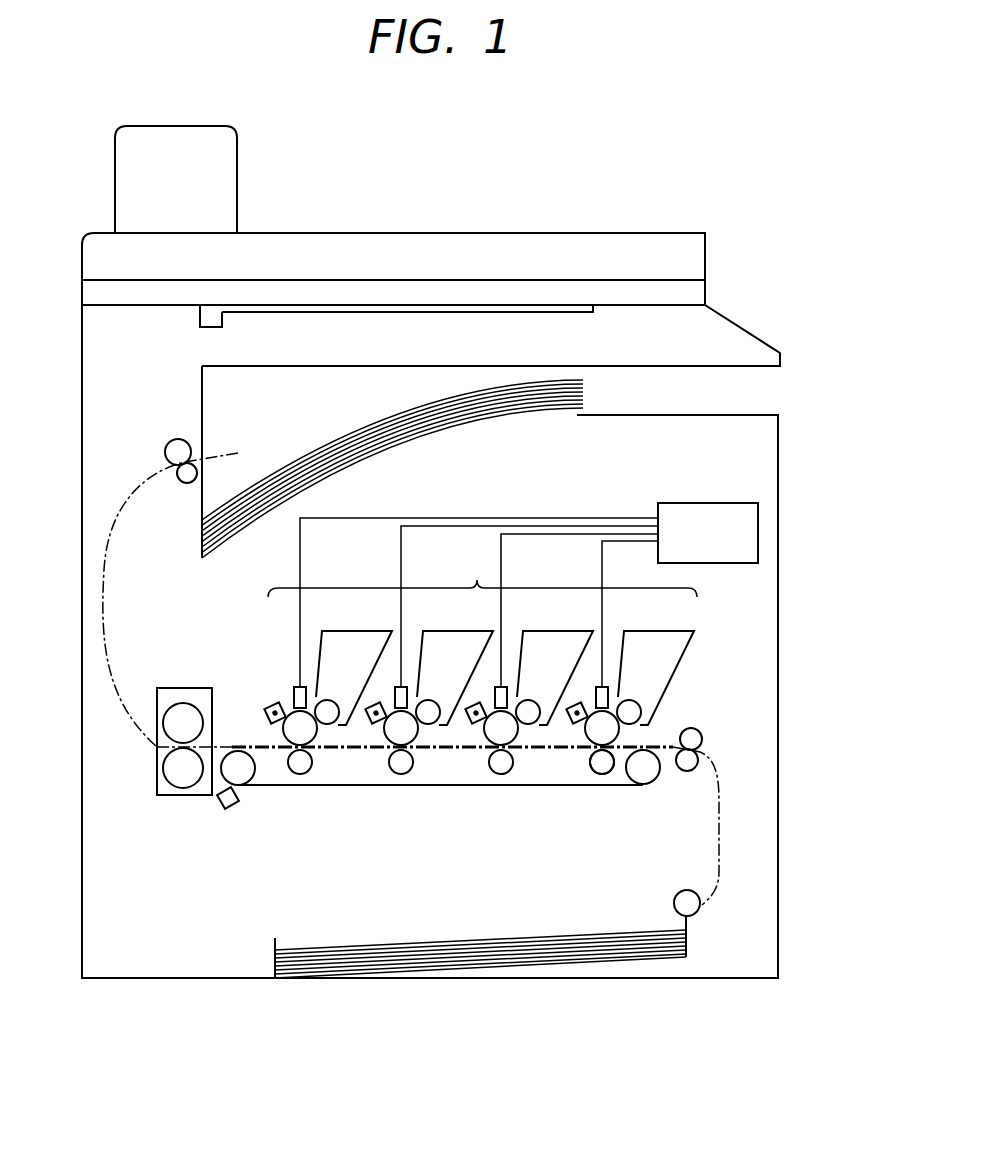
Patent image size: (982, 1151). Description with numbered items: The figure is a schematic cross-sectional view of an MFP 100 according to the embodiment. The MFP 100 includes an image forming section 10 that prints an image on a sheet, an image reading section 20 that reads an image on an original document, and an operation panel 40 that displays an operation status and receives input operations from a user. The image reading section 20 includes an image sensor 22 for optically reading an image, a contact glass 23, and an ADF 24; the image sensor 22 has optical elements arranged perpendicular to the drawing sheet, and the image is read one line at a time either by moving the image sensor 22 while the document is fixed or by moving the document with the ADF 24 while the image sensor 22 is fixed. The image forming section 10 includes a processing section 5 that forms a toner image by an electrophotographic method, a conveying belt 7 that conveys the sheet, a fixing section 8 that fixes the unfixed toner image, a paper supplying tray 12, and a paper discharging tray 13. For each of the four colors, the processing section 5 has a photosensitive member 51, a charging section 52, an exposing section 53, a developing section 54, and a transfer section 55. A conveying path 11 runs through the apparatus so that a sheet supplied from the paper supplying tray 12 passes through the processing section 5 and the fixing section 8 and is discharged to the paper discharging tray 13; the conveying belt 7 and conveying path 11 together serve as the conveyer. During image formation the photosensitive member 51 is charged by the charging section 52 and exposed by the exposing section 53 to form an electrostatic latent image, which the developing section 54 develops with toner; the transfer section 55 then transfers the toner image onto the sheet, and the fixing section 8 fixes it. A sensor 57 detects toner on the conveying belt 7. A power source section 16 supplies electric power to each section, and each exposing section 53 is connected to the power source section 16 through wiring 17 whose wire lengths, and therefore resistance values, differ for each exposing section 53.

The MFP 100 is at (618, 158).
The image reading section 20 is at (262, 204).
The ADF (automatic document feeder) 24 is at (170, 135).
The image sensor 22 is at (200, 328).
The contact glass 23 is at (241, 313).
The operation panel 40 is at (746, 326).
The image forming section 10 is at (735, 457).
The paper discharging tray 13 is at (310, 495).
The power source section 16 is at (692, 503).
The wiring 17 is at (567, 518).
The processing section 5 is at (495, 661).
The photosensitive member 51 is at (655, 718).
The charging section 52 is at (576, 657).
The exposing section 53 is at (622, 649).
The developing section 54 is at (655, 658).
The transfer section 55 is at (602, 774).
The conveying belt 7 is at (272, 787).
The fixing section 8 is at (157, 762).
The sensor 57 is at (220, 805).
The conveying path 11 is at (726, 826).
The paper supplying tray 12 is at (560, 978).